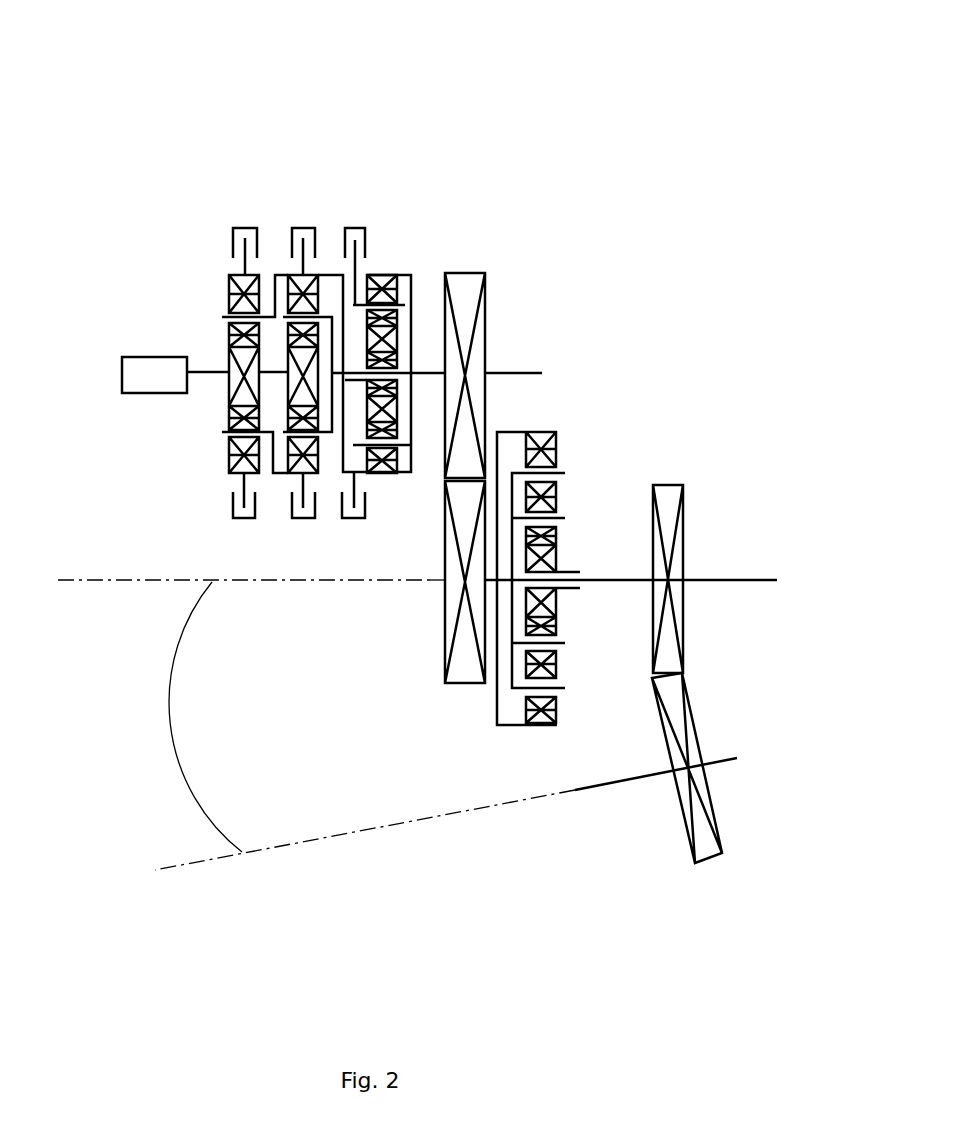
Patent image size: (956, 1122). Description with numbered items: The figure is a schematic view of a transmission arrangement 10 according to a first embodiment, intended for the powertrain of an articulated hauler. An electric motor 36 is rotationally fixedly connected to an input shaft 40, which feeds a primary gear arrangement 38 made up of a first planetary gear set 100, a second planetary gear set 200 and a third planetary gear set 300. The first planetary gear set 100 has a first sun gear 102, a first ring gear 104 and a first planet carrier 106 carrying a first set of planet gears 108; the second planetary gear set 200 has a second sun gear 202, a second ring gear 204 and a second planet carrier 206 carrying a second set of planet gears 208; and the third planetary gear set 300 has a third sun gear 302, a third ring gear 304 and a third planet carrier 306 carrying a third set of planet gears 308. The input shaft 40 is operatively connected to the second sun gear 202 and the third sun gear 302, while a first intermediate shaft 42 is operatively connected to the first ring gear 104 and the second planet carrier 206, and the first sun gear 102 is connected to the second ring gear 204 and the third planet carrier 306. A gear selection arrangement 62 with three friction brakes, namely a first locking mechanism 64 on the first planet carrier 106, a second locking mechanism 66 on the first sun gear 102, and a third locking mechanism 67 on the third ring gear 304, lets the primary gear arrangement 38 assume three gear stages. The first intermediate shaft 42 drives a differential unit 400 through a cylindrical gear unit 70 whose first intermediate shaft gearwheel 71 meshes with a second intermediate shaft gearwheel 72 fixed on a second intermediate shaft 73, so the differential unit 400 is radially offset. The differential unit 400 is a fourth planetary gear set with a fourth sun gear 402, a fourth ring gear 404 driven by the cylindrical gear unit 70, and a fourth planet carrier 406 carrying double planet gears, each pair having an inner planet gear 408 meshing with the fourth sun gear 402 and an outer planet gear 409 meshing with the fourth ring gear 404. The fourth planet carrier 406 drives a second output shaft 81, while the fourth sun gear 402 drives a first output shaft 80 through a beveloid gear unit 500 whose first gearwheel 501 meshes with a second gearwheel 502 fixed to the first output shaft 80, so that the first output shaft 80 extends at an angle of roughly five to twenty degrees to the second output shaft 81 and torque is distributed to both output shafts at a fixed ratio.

The transmission arrangement 10 is at (636, 243).
The electric motor 36 is at (125, 357).
The primary gear arrangement 38 is at (188, 103).
The input shaft 40 is at (228, 365).
The first intermediate shaft 42 is at (520, 372).
The gear selection arrangement 62 is at (212, 533).
The first locking mechanism 64 is at (355, 520).
The second locking mechanism 66 is at (311, 520).
The third locking mechanism 67 is at (238, 520).
The cylindrical gear unit 70 is at (451, 699).
The first intermediate shaft gearwheel 71 is at (473, 283).
The second intermediate shaft gearwheel 72 is at (455, 622).
The second intermediate shaft 73 is at (420, 582).
The first output shaft 80 is at (612, 785).
The second output shaft 81 is at (743, 585).
The first planetary gear set 100 is at (393, 239).
The first sun gear 102 is at (382, 337).
The first ring gear 104 is at (398, 275).
The first planet carrier 106 is at (400, 446).
The first set of planet gears 108 is at (387, 453).
The second planetary gear set 200 is at (307, 211).
The second sun gear 202 is at (292, 383).
The second ring gear 204 is at (308, 276).
The second planet carrier 206 is at (288, 283).
The second set of planet gears 208 is at (300, 474).
The third planetary gear set 300 is at (240, 219).
The third sun gear 302 is at (232, 367).
The third ring gear 304 is at (232, 275).
The third planet carrier 306 is at (242, 452).
The third set of planet gears 308 is at (232, 458).
The differential unit 400 is at (533, 749).
The fourth sun gear 402 is at (557, 600).
The fourth ring gear 404 is at (557, 444).
The fourth planet carrier 406 is at (563, 473).
The inner planet gear 408 is at (557, 660).
The outer planet gear 409 is at (557, 705).
The beveloid gear unit 500 is at (722, 882).
The first gearwheel 501 is at (683, 530).
The second gearwheel 502 is at (717, 817).